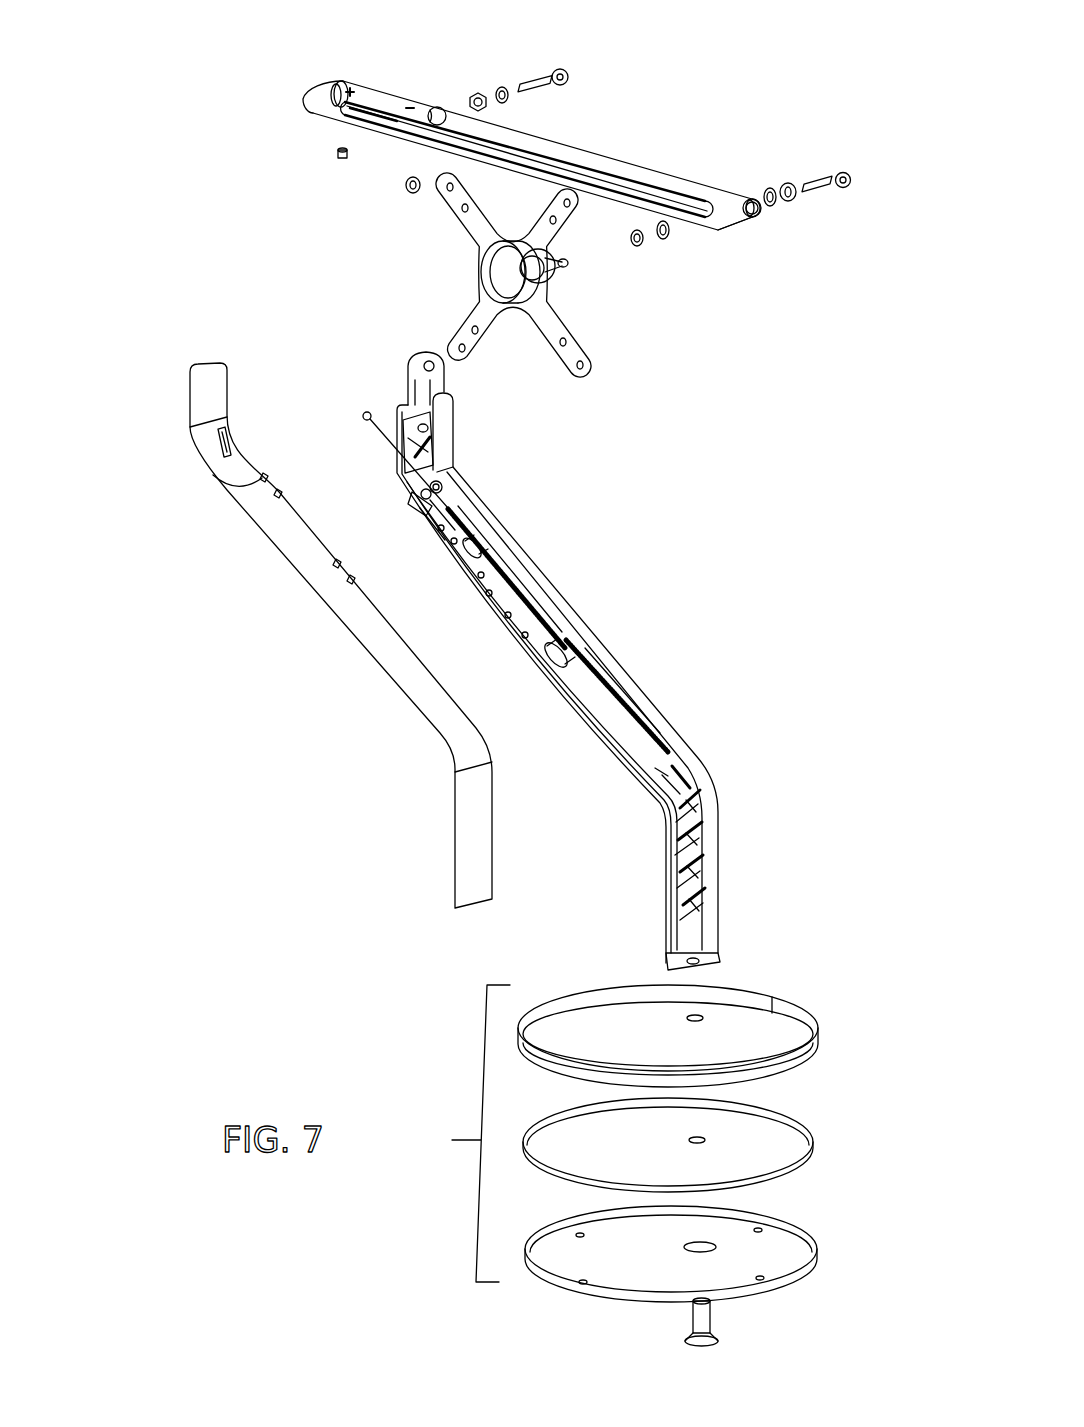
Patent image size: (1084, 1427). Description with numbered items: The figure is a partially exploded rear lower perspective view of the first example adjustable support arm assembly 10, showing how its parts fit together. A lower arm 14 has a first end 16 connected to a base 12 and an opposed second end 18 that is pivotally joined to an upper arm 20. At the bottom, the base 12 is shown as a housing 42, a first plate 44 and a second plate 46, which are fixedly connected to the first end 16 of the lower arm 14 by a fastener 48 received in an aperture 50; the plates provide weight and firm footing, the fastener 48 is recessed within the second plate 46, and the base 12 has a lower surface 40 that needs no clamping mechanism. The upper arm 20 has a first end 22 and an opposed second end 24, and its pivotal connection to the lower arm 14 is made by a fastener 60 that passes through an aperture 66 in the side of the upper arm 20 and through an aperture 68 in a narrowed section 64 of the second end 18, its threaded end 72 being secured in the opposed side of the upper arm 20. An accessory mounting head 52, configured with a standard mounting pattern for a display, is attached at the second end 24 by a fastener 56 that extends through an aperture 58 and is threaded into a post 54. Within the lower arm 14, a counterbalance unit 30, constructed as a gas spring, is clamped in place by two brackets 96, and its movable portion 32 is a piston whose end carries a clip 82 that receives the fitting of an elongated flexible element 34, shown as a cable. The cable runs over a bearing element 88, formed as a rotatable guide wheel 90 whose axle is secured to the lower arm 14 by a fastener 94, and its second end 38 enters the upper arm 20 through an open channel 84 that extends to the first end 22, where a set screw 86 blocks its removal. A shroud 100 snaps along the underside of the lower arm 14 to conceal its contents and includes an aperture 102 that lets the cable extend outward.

The adjustable support arm assembly 10 is at (146, 111).
The base 12 is at (652, 1165).
The lower arm 14 is at (550, 639).
The first end 16 is at (713, 937).
The second end 18 is at (446, 410).
The upper arm 20 is at (539, 153).
The first end 22 is at (368, 90).
The second end 24 is at (732, 196).
The counterbalance unit 30 is at (498, 583).
The movable portion 32 is at (600, 708).
The elongated flexible element 34 is at (387, 445).
The second end 38 is at (364, 414).
The lower surface 40 is at (626, 1266).
The housing 42 is at (795, 1016).
The first plate 44 is at (795, 1122).
The second plate 46 is at (707, 1254).
The fastener 48 is at (703, 1321).
The aperture 50 is at (700, 962).
The accessory mounting head 52 is at (548, 275).
The post 54 is at (567, 263).
The fastener 56 is at (828, 184).
The aperture 58 is at (757, 216).
The fastener 60 is at (568, 76).
The narrowed section 64 is at (417, 392).
The aperture 66 is at (435, 106).
The aperture 68 is at (420, 353).
The threaded end 72 is at (512, 82).
The clip 82 is at (690, 776).
The open channel 84 is at (333, 88).
The set screw 86 is at (336, 158).
The bearing element 88 is at (442, 491).
The guide wheel 90 is at (441, 484).
The fastener 94 is at (412, 498).
The brackets 96 is at (473, 548).
The shroud 100 is at (339, 635).
The aperture 102 is at (224, 458).